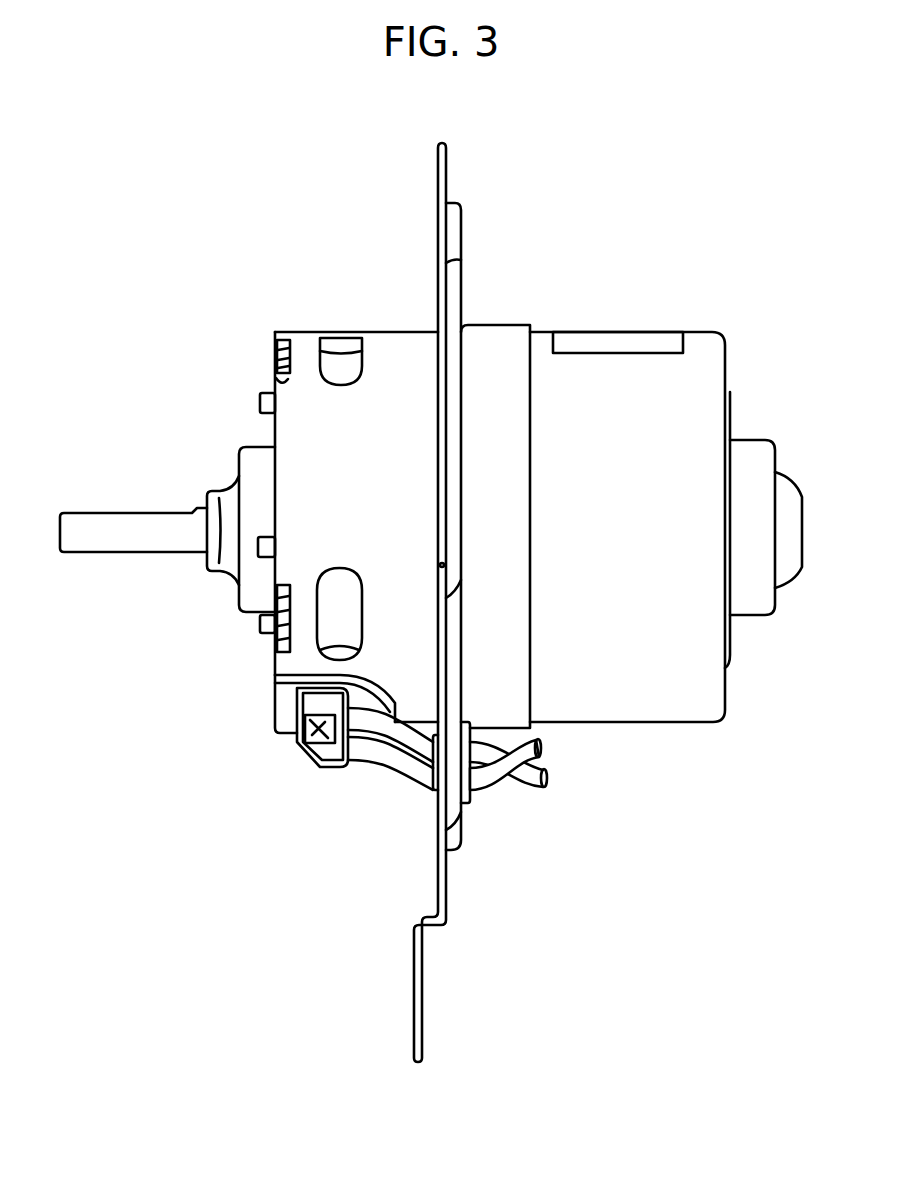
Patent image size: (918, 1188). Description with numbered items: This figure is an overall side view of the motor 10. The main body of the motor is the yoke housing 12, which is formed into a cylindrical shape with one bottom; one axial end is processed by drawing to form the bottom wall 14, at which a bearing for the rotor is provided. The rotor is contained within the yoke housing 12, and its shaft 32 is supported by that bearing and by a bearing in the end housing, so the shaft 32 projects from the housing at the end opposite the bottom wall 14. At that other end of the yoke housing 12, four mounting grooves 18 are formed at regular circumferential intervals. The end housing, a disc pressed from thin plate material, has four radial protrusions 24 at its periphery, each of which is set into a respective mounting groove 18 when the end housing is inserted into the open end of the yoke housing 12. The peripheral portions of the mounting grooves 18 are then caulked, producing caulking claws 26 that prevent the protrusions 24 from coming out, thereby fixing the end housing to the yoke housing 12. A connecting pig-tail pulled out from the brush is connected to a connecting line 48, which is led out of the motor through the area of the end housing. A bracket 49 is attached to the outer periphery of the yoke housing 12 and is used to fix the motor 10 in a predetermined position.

The motor 10 is at (516, 477).
The yoke housing 12 is at (408, 331).
The bottom wall 14 is at (730, 395).
The mounting grooves 18 is at (293, 342).
The protrusions 24 is at (277, 365).
The caulking claws 26 is at (275, 387).
The shaft 32 is at (172, 512).
The connecting line 48 is at (383, 767).
The bracket 49 is at (438, 890).